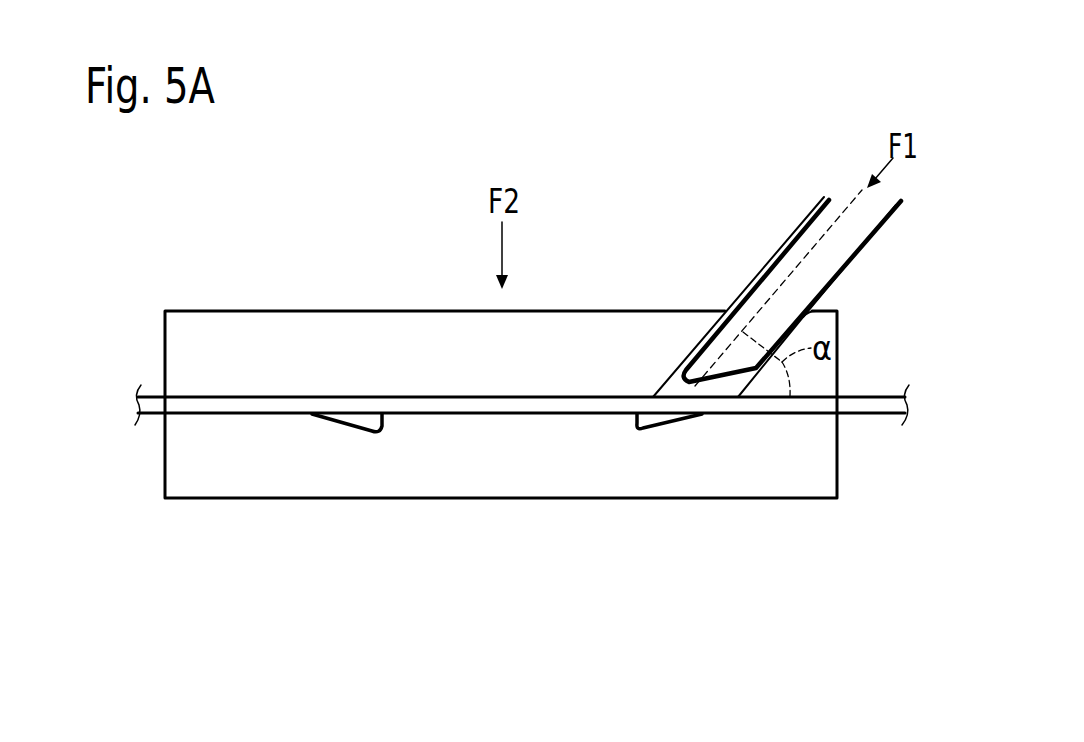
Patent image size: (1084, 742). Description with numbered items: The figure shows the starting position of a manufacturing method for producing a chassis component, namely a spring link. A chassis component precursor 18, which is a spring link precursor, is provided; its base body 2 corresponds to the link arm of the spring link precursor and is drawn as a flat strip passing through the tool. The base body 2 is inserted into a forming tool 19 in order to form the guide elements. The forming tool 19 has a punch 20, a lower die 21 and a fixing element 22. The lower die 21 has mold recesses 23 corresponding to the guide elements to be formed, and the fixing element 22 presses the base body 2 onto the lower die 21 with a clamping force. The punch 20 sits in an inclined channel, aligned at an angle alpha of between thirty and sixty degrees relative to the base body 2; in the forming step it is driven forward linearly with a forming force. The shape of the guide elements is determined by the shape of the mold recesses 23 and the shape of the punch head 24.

The base body 2 is at (283, 402).
The chassis component precursor 18 is at (236, 383).
The forming tool 19 is at (501, 363).
The punch 20 is at (768, 267).
The lower die 21 is at (480, 462).
The fixing element 22 is at (543, 343).
The mold recesses 23 is at (368, 428).
The punch head 24 is at (720, 382).